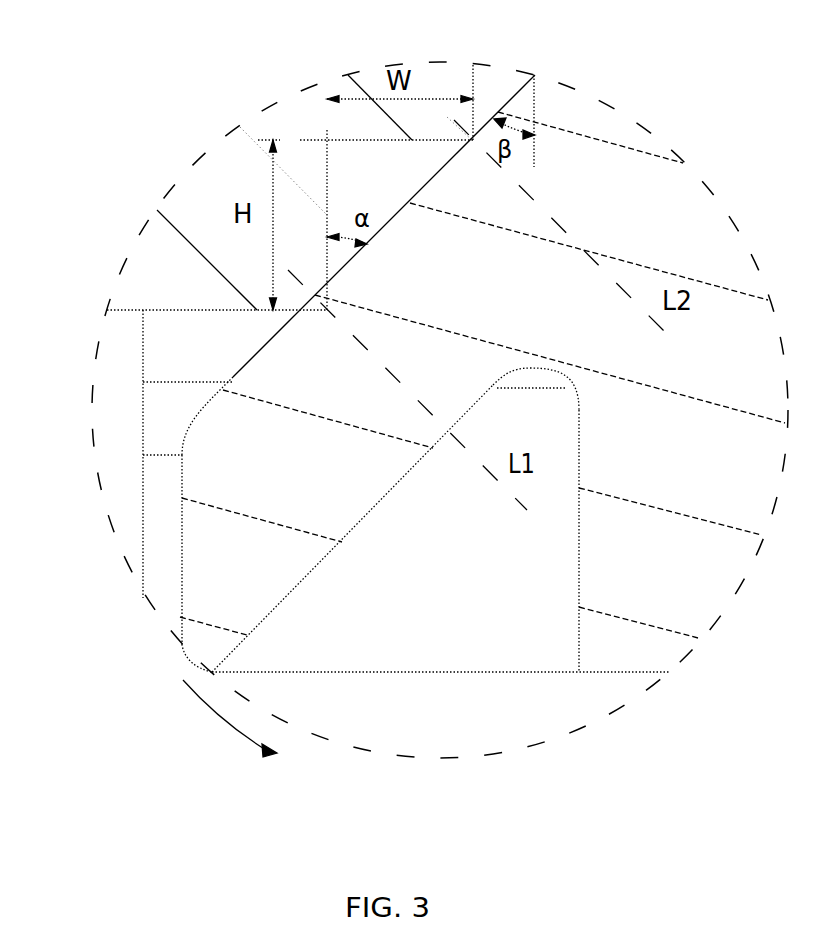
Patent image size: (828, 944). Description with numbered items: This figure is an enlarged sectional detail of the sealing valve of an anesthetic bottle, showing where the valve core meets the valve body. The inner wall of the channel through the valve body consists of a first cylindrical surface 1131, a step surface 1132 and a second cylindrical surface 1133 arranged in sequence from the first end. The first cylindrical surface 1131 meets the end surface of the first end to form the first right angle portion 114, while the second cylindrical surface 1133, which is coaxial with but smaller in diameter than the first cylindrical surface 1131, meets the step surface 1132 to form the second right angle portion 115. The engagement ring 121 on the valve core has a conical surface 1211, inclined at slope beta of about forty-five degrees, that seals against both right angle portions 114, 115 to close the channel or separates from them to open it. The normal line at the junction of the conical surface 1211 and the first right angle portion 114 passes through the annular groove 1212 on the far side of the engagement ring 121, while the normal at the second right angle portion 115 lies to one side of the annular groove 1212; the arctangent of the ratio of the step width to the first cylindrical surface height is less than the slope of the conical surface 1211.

The first right angle portion 114 is at (302, 300).
The second right angle portion 115 is at (458, 118).
The engagement ring 121 is at (200, 553).
The first cylindrical surface 1131 is at (330, 167).
The step surface 1132 is at (355, 140).
The second cylindrical surface 1133 is at (478, 83).
The conical surface 1211 is at (237, 374).
The annular groove 1212 is at (513, 647).